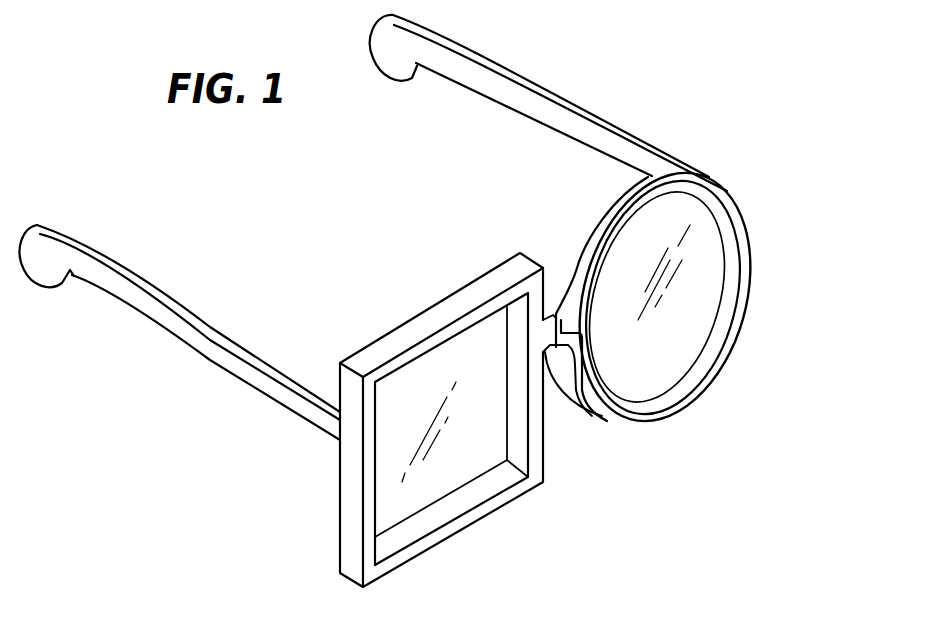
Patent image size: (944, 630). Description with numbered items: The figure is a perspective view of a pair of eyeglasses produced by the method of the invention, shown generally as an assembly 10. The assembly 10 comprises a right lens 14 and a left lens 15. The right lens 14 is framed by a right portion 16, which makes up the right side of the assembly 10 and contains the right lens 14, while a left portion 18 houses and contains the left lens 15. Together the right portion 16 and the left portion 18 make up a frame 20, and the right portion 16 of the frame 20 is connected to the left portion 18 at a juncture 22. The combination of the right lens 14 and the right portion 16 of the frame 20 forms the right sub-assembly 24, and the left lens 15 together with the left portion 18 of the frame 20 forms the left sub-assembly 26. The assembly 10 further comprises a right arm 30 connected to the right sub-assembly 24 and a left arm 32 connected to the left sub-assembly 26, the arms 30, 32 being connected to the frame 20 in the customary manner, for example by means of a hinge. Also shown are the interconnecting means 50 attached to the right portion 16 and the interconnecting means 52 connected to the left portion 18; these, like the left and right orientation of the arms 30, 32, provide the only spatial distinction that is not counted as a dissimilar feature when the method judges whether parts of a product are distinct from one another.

The assembly 10 is at (287, 466).
The right lens 14 is at (465, 470).
The left lens 15 is at (676, 322).
The right portion 16 is at (520, 490).
The left portion 18 is at (738, 302).
The frame 20 is at (437, 624).
The juncture 22 is at (590, 347).
The right sub-assembly 24 is at (340, 349).
The left sub-assembly 26 is at (809, 320).
The right arm 30 is at (194, 349).
The left arm 32 is at (458, 70).
The interconnecting means 50 is at (557, 395).
The interconnecting means 52 is at (567, 290).